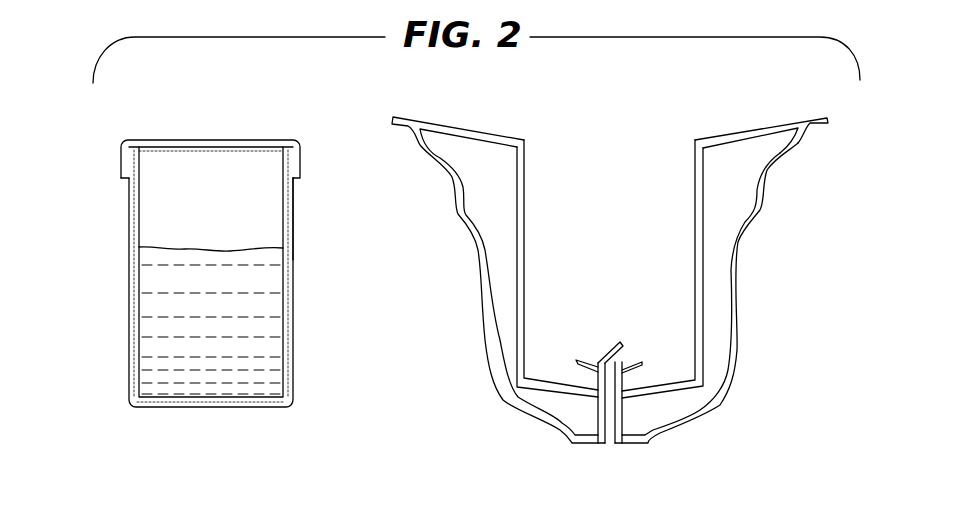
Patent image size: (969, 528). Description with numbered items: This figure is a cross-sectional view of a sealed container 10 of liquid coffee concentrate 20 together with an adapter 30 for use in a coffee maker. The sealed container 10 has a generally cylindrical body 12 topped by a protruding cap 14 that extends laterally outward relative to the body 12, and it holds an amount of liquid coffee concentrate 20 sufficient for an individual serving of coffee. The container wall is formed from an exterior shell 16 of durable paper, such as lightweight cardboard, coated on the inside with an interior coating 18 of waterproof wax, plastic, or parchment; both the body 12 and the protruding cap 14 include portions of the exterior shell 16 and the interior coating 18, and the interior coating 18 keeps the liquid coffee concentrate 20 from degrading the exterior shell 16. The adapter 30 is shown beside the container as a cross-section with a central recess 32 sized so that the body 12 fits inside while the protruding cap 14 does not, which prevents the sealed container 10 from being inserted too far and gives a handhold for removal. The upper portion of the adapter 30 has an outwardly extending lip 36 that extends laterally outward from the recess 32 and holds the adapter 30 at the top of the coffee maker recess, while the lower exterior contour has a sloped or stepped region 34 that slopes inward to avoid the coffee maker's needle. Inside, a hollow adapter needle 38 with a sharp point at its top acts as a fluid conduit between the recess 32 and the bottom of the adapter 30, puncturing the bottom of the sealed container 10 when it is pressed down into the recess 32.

The sealed container 10 is at (112, 245).
The body 12 is at (135, 388).
The protruding cap 14 is at (188, 141).
The exterior shell 16 is at (293, 228).
The interior coating 18 is at (285, 198).
The liquid coffee concentrate 20 is at (138, 281).
The adapter 30 is at (460, 262).
The recess 32 is at (637, 137).
The sloped or stepped region 34 is at (690, 418).
The lip 36 is at (805, 120).
The adapter needle 38 is at (618, 342).